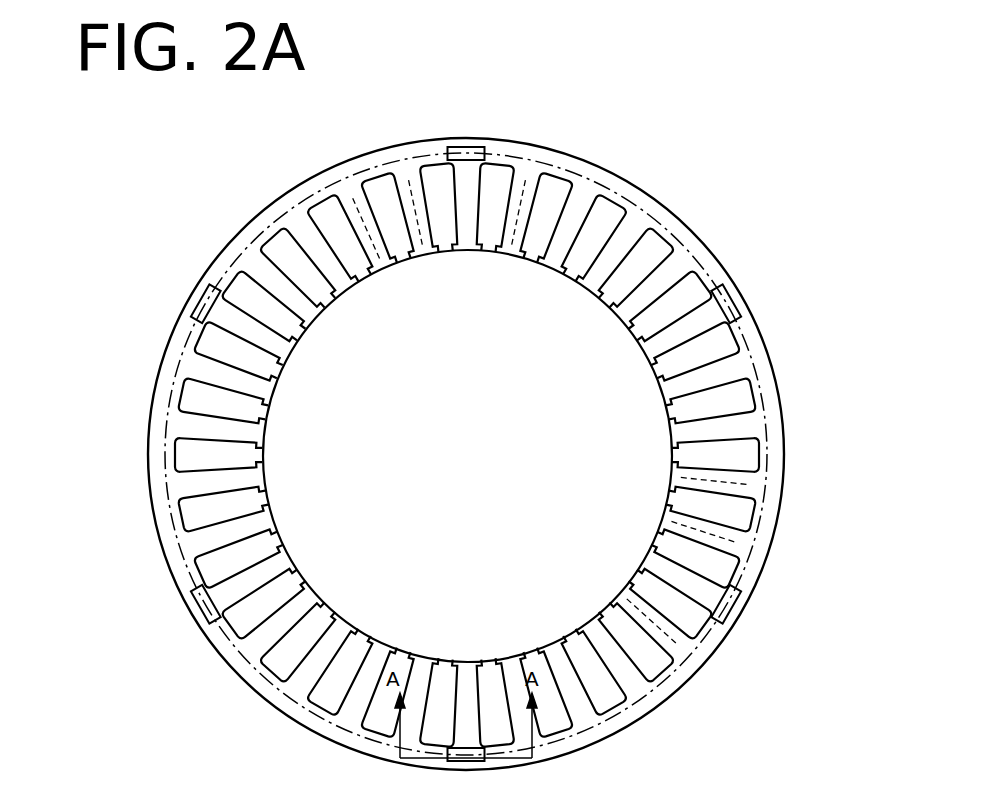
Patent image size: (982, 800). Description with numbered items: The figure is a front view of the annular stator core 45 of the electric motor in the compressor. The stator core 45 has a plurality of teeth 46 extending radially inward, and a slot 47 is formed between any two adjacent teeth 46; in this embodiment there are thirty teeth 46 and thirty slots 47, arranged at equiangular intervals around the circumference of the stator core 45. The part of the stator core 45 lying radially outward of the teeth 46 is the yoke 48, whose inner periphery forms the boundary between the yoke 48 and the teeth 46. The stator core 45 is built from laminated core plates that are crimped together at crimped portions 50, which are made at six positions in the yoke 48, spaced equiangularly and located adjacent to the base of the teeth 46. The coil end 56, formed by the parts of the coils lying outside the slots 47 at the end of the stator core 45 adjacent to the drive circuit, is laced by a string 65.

The stator core 45 is at (672, 208).
The teeth 46 is at (467, 252).
The slot 47 is at (645, 258).
The yoke 48 is at (783, 428).
The crimped portions 50 is at (466, 146).
The coil end 56 is at (277, 203).
The string 65 is at (410, 150).